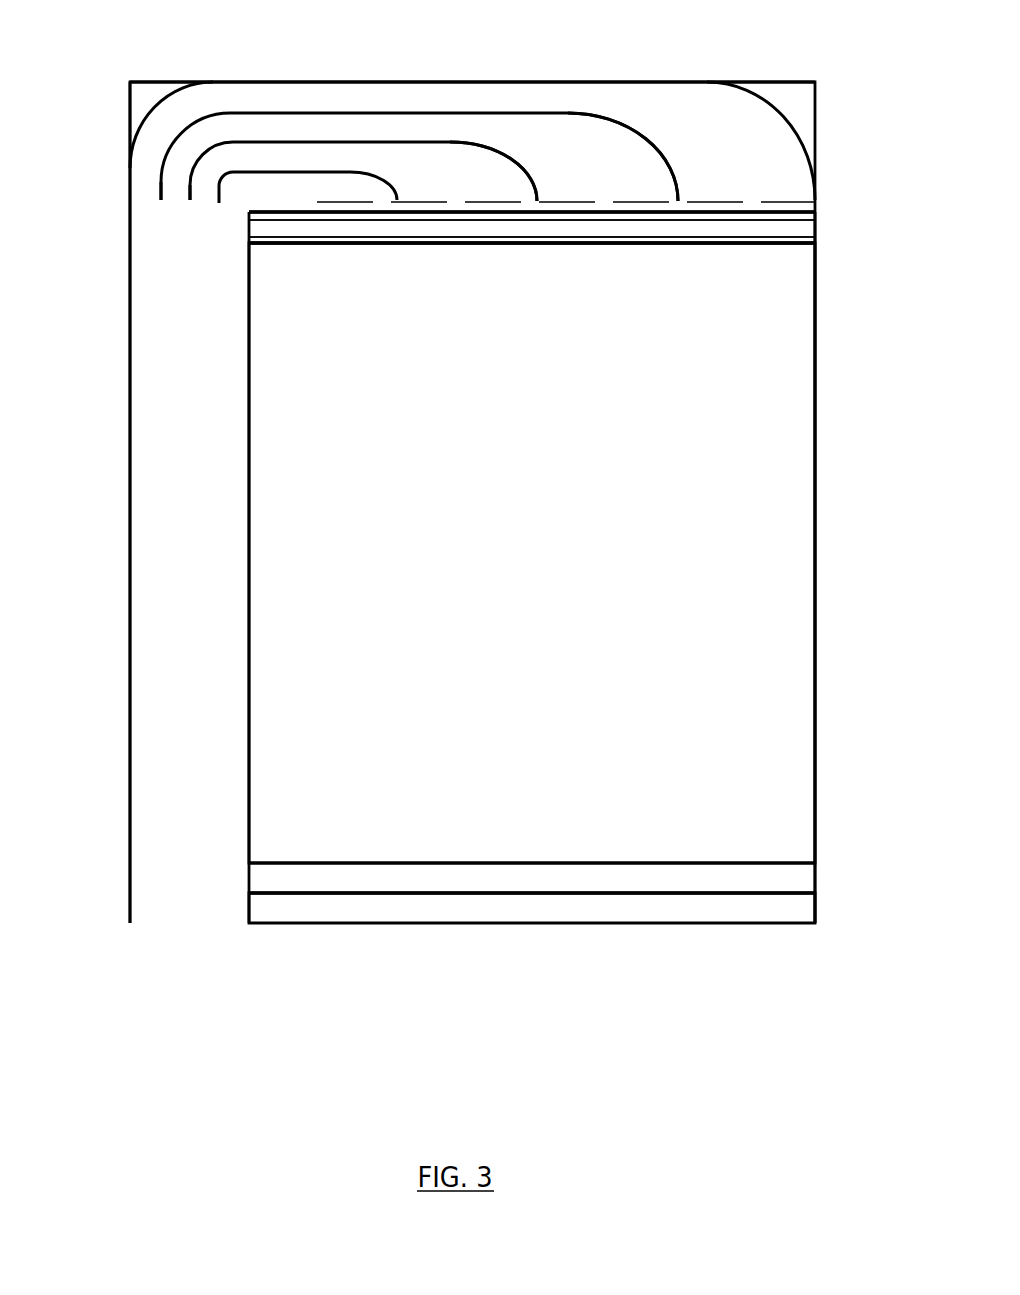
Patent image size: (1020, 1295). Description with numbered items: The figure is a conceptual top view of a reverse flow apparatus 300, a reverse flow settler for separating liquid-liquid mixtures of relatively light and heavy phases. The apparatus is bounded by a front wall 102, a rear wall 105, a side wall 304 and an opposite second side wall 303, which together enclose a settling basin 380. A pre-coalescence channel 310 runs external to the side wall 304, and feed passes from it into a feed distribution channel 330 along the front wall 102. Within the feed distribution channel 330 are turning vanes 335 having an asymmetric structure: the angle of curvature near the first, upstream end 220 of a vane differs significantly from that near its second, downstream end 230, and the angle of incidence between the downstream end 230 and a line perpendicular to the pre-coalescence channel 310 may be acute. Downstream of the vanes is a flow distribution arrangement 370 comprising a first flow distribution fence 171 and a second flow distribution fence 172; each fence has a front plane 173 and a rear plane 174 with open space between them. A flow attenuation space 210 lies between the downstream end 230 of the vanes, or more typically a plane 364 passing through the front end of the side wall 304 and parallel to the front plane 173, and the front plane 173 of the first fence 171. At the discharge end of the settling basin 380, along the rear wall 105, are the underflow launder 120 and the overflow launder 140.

The reverse flow apparatus 300 is at (185, 935).
The feed distribution channel 330 is at (826, 156).
The pre-coalescence channel 310 is at (187, 724).
The front wall 102 is at (522, 82).
The turning vanes 335 is at (363, 142).
The first upstream end 220 is at (190, 202).
The second downstream end 230 is at (537, 201).
The plane passing through front end of side wall 364 is at (277, 202).
The flow attenuation space 210 is at (735, 206).
The flow distribution arrangement 370 is at (825, 200).
The first flow distribution fence 171 is at (303, 217).
The second flow distribution fence 172 is at (377, 239).
The front plane 173 is at (438, 212).
The rear plane 174 is at (523, 220).
The side wall 304 is at (249, 635).
The second side wall 303 is at (816, 635).
The settling basin 380 is at (600, 755).
The underflow launder 120 is at (378, 877).
The rear wall 105 is at (452, 893).
The overflow launder 140 is at (542, 910).